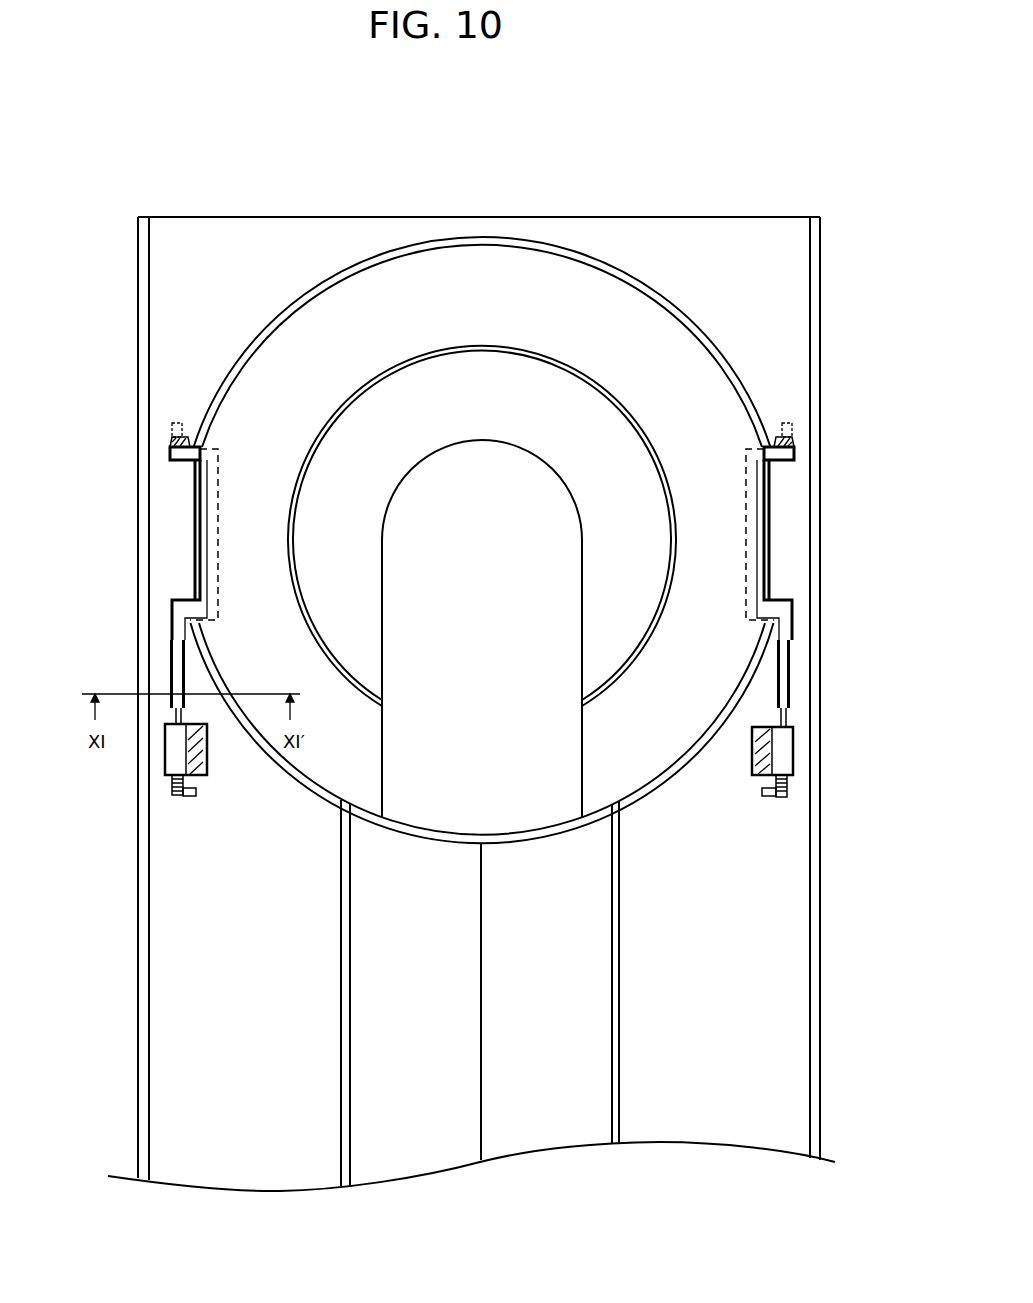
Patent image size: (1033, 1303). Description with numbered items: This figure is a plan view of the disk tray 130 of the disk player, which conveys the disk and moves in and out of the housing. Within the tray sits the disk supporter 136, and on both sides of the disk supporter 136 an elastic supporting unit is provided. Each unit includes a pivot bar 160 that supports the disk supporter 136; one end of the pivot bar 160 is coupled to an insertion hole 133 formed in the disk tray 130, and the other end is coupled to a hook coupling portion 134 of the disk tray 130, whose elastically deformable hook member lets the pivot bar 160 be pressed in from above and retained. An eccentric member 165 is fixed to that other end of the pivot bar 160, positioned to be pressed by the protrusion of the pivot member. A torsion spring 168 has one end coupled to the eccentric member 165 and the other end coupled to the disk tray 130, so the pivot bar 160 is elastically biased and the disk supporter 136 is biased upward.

The disk tray 130 is at (748, 948).
The insertion hole 133 is at (173, 422).
The hook coupling portion 134 is at (172, 693).
The disk supporter 136 is at (650, 728).
The pivot bar 160 is at (212, 538).
The eccentric member 165 is at (173, 763).
The torsion spring 168 is at (170, 790).